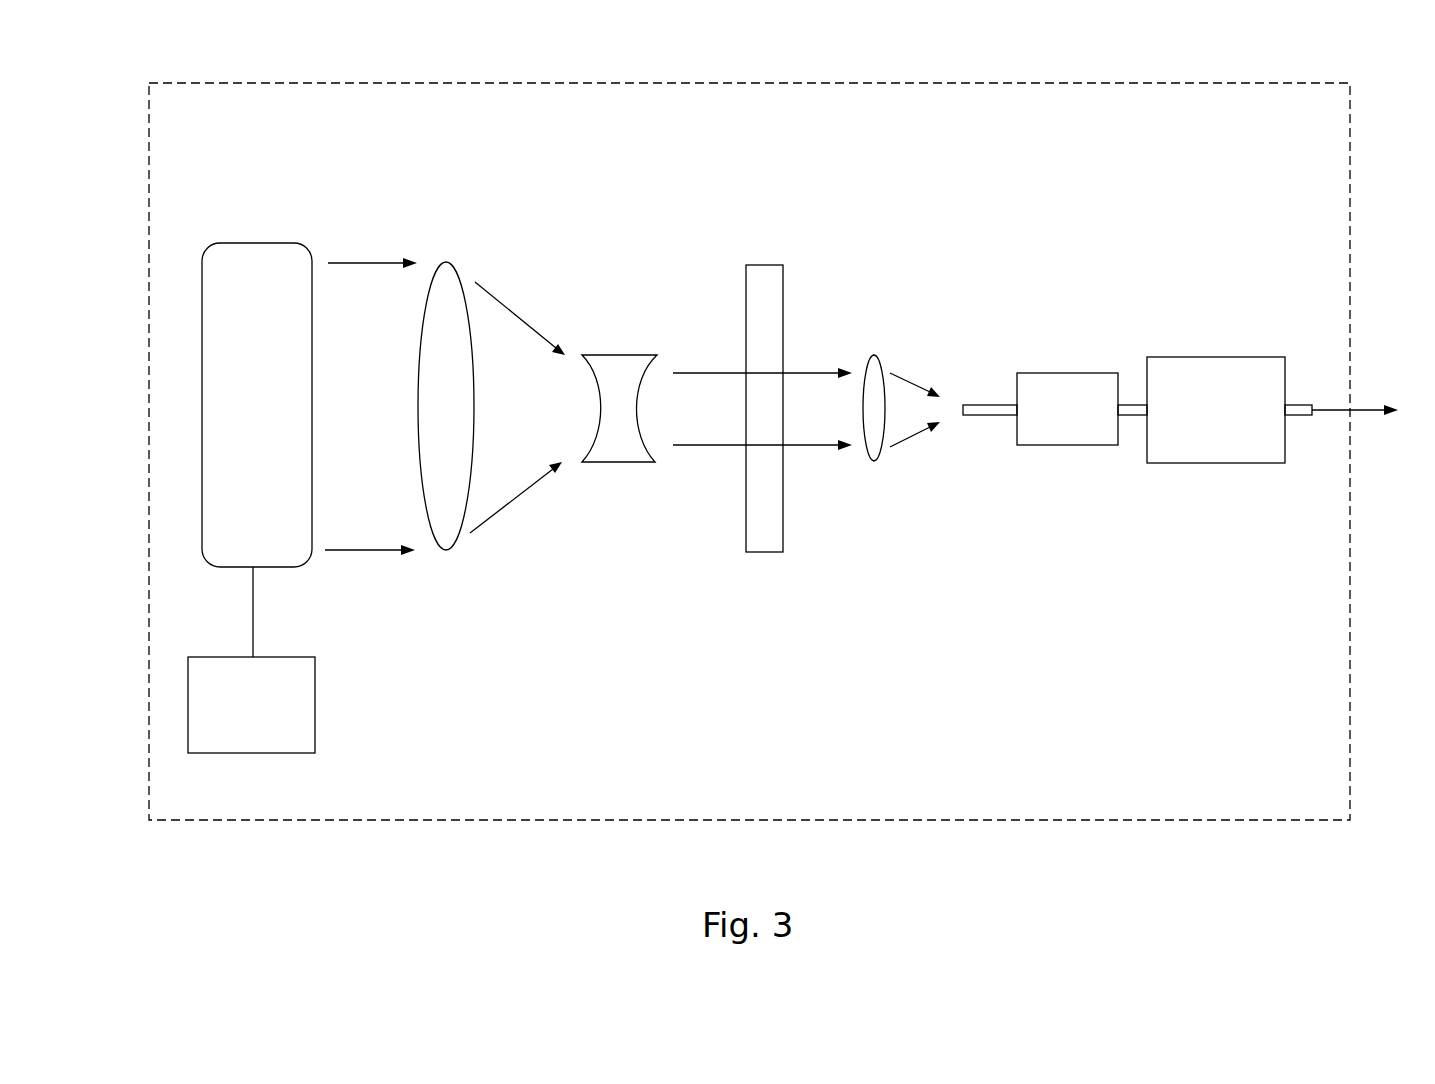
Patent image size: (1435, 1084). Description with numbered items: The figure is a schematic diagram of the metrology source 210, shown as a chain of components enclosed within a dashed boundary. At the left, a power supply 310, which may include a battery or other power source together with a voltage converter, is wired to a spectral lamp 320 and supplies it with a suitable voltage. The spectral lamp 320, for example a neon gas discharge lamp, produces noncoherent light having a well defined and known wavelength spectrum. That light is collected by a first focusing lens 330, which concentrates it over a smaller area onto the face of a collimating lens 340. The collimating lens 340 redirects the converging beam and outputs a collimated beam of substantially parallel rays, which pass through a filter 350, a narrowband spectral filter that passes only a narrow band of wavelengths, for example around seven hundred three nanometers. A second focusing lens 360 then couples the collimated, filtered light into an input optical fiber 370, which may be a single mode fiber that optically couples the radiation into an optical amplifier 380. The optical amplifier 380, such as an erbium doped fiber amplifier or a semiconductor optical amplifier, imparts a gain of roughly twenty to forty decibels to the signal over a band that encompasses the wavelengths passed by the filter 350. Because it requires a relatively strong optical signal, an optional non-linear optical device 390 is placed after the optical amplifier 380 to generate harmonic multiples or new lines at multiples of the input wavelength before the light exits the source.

The metrology source 210 is at (1068, 822).
The power supply 310 is at (315, 712).
The spectral lamp 320 is at (276, 243).
The first focusing lens 330 is at (455, 262).
The collimating lens 340 is at (645, 355).
The filter 350 is at (767, 265).
The second focusing lens 360 is at (880, 462).
The input optical fiber 370 is at (975, 405).
The optical amplifier 380 is at (1070, 445).
The non-linear optical device 390 is at (1222, 357).